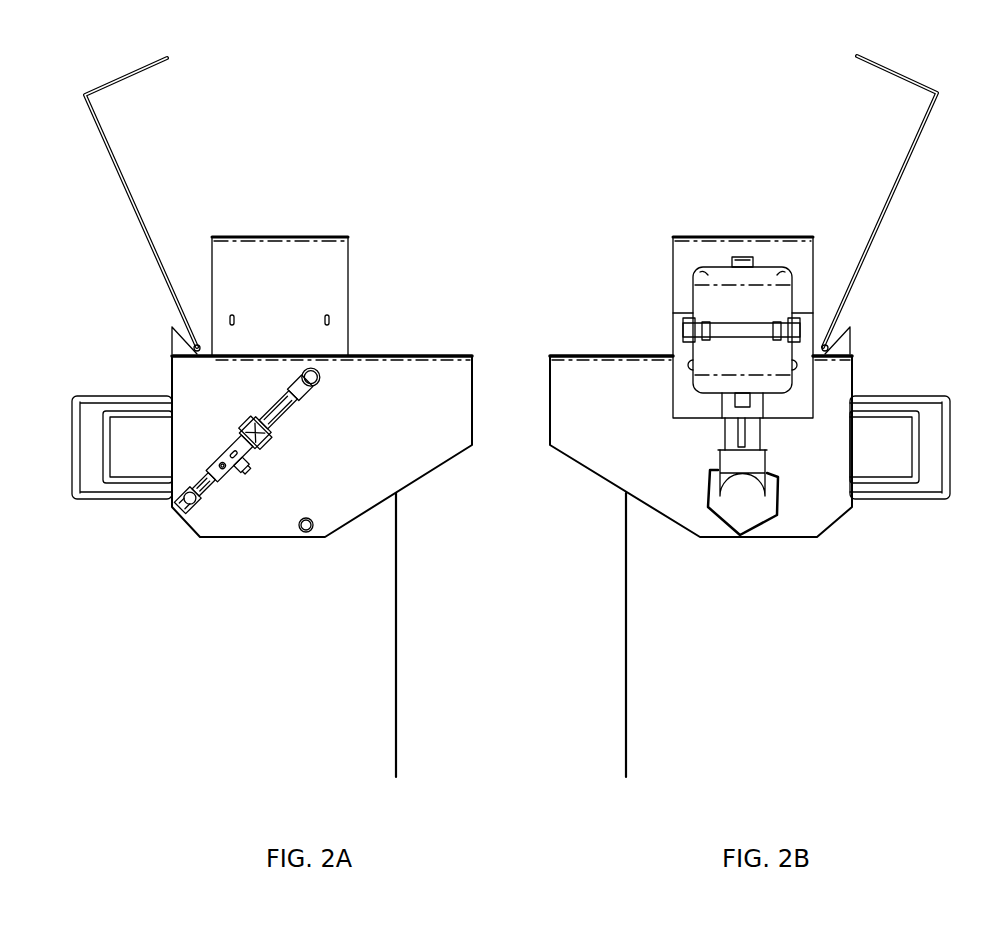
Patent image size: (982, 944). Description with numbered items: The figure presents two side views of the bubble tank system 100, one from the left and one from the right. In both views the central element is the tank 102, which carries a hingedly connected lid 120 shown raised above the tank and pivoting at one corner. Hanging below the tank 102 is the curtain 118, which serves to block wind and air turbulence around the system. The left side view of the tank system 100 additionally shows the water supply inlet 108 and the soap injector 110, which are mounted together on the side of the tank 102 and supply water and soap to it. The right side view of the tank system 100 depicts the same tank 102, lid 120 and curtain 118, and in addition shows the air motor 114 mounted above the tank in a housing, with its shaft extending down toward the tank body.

In FIG. 2A, the bubble tank system 100 is at (62, 58).
In FIG. 2A, the tank 102 is at (412, 440).
In FIG. 2B, the tank 102 is at (550, 555).
In FIG. 2A, the water supply inlet 108 is at (208, 504).
In FIG. 2A, the soap injector 110 is at (247, 470).
In FIG. 2B, the air motor 114 is at (717, 360).
In FIG. 2A, the curtain 118 is at (396, 642).
In FIG. 2B, the curtain 118 is at (626, 697).
In FIG. 2A, the lid 120 is at (148, 228).
In FIG. 2B, the lid 120 is at (910, 150).